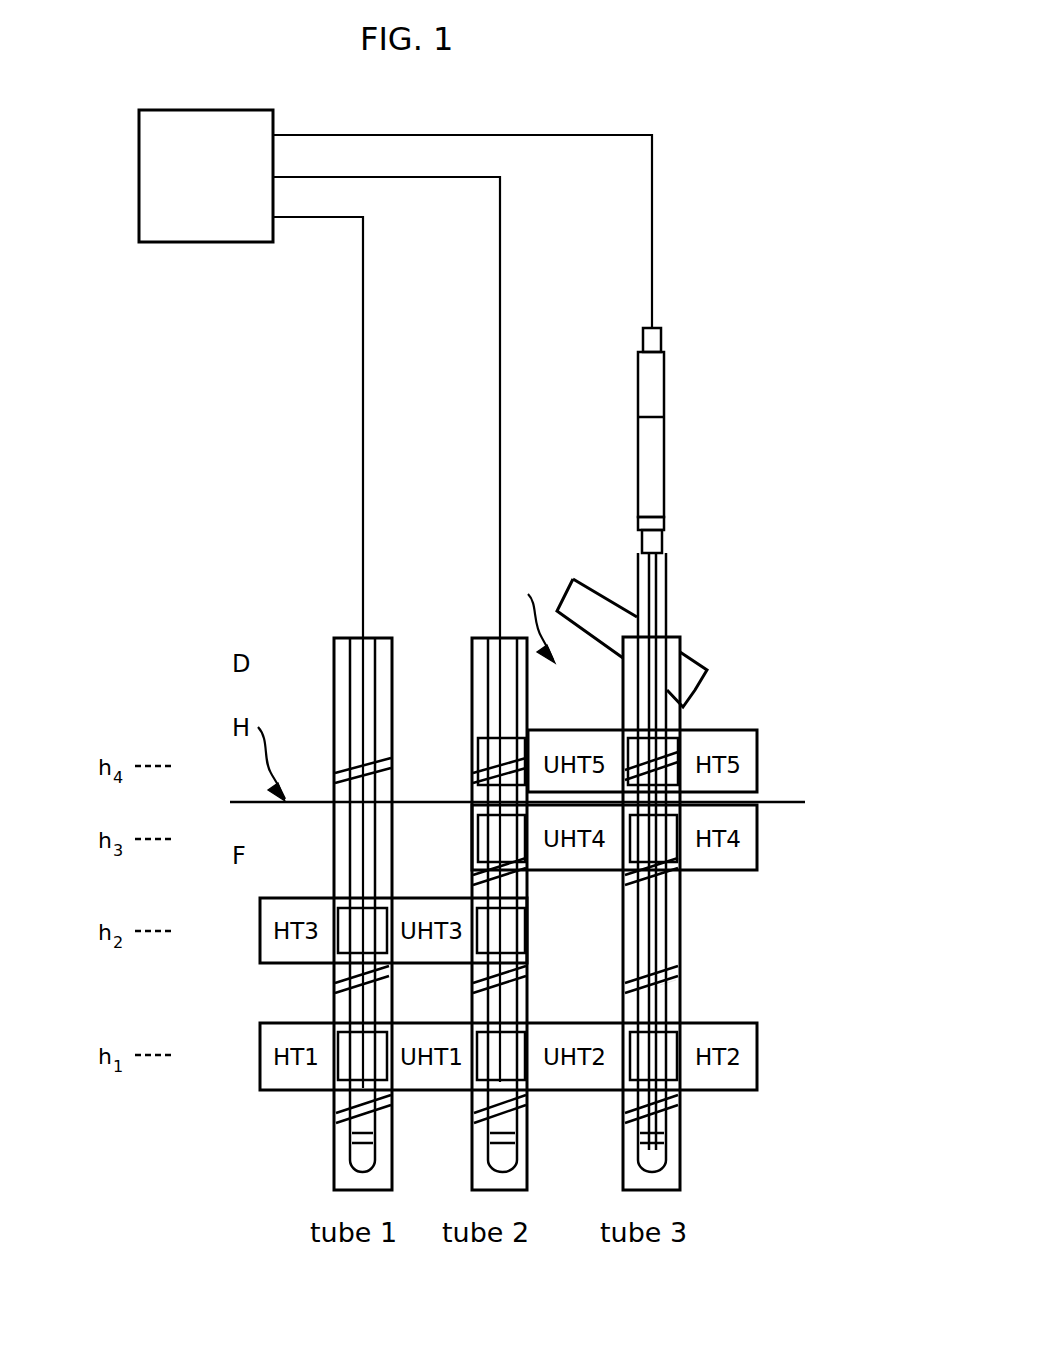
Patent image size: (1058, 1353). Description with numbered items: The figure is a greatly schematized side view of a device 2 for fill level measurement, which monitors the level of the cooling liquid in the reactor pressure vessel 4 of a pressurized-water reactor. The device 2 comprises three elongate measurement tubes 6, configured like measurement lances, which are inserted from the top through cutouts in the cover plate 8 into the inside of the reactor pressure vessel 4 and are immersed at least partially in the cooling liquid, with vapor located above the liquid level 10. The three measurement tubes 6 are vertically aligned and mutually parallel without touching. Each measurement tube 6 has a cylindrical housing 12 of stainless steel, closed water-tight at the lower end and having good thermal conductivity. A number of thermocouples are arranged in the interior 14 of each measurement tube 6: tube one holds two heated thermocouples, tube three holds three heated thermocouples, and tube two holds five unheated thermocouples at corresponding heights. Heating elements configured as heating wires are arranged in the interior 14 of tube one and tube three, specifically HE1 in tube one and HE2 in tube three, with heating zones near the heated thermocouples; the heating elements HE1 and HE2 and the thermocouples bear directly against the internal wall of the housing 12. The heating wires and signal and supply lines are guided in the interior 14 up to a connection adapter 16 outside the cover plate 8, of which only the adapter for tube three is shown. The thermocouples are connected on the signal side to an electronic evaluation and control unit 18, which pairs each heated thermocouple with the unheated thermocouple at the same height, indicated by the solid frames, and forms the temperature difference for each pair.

The device 2 is at (786, 427).
The reactor pressure vessel 4 is at (522, 605).
The measurement tube 6 is at (345, 653).
The cover plate 8 is at (583, 578).
The liquid level 10 is at (432, 800).
The cylindrical housing 12 is at (350, 1147).
The interior 14 is at (660, 995).
The connection adapter 16 is at (665, 382).
The evaluation and control unit 18 is at (204, 108).
The heating element HE1 is at (340, 993).
The heating element HE2 is at (664, 907).